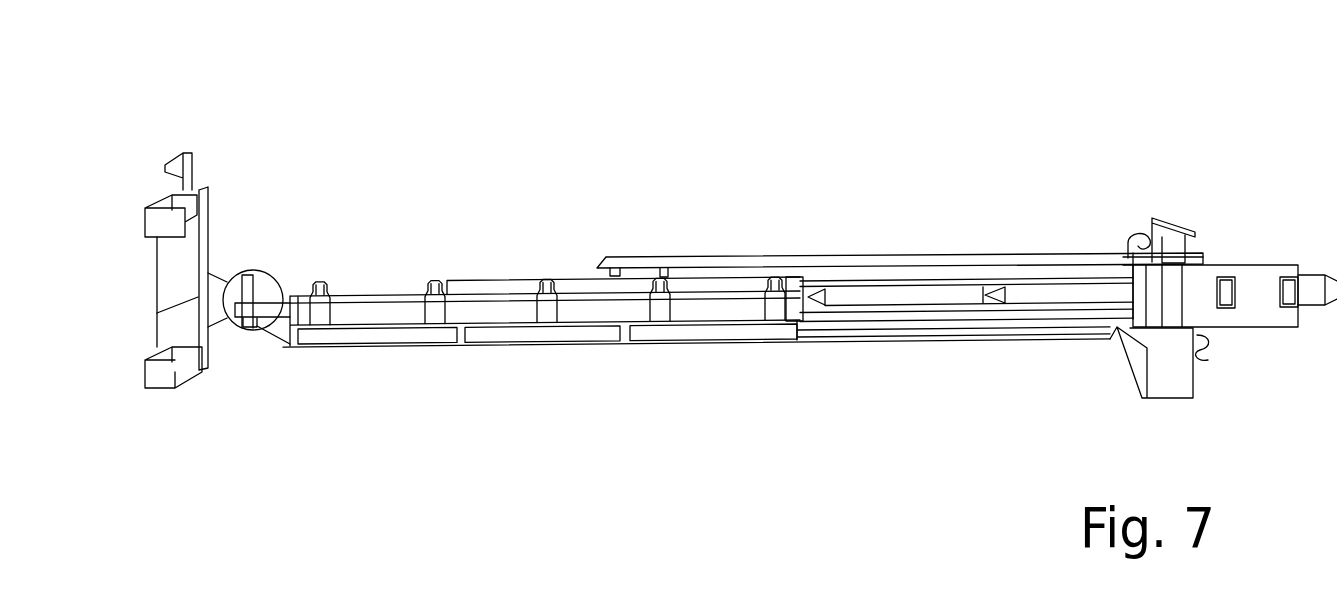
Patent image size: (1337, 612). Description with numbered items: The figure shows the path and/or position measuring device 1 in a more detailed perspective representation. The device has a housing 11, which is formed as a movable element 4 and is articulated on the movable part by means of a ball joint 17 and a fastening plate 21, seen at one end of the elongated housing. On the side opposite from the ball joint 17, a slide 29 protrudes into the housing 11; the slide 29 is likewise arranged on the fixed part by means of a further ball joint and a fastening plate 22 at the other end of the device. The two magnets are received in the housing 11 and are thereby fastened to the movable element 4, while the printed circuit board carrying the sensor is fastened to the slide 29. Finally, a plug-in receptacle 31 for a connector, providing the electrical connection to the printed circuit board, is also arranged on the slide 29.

The path and/or position measuring device 1 is at (668, 150).
The movable element 4 is at (525, 358).
The housing 11 is at (398, 335).
The ball joint 17 is at (263, 296).
The fastening plate 21 is at (182, 266).
The fastening plate 22 is at (1260, 288).
The slide 29 is at (942, 333).
The plug-in receptacle 31 is at (1174, 376).